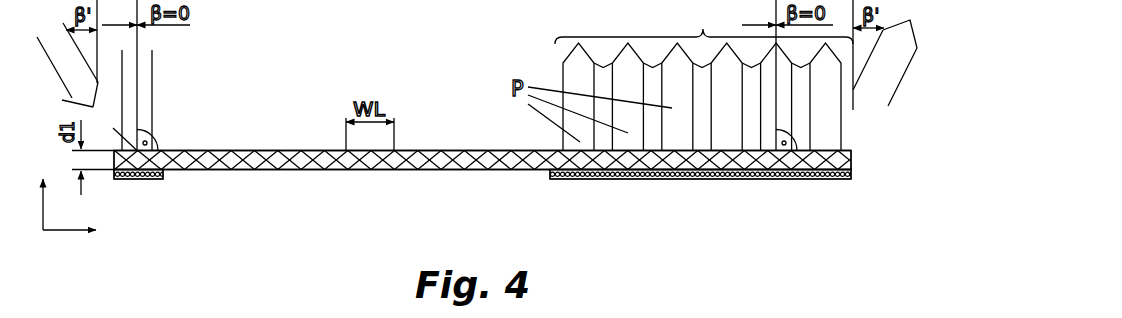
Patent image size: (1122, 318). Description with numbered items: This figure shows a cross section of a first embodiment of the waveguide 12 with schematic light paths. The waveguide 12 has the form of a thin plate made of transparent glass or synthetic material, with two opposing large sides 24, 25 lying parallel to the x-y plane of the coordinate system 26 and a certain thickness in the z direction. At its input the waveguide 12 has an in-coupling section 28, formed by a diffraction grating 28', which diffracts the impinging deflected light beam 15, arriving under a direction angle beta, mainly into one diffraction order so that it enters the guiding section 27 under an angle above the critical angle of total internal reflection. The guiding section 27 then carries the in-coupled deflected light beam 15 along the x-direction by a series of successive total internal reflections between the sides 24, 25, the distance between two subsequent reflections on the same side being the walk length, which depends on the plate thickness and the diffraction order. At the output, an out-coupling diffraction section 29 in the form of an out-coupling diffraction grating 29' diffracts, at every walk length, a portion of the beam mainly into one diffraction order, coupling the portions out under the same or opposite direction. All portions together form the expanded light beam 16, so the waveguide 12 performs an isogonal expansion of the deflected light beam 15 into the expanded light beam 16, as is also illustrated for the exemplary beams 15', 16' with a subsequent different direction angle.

The waveguide 12 is at (779, 224).
The deflected light beam 15 is at (154, 75).
The exemplary deflected light beam 15' is at (65, 54).
The expanded light beam 16 is at (704, 75).
The exemplary expanded light beam 16' is at (885, 65).
The large side 24 is at (463, 168).
The large side 25 is at (463, 152).
The coordinate system 26 is at (53, 232).
The guiding section 27 is at (283, 172).
The in-coupling section 28 is at (134, 220).
The diffraction grating 28' is at (148, 198).
The out-coupling diffraction section 29 is at (700, 219).
The out-coupling diffraction grating 29' is at (700, 197).